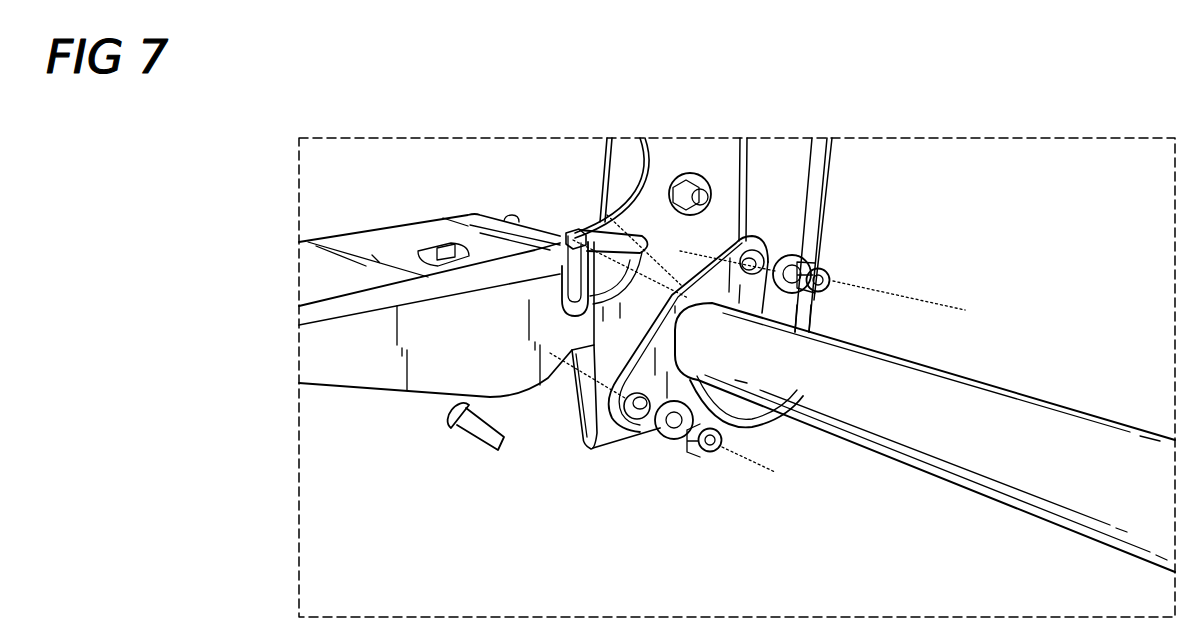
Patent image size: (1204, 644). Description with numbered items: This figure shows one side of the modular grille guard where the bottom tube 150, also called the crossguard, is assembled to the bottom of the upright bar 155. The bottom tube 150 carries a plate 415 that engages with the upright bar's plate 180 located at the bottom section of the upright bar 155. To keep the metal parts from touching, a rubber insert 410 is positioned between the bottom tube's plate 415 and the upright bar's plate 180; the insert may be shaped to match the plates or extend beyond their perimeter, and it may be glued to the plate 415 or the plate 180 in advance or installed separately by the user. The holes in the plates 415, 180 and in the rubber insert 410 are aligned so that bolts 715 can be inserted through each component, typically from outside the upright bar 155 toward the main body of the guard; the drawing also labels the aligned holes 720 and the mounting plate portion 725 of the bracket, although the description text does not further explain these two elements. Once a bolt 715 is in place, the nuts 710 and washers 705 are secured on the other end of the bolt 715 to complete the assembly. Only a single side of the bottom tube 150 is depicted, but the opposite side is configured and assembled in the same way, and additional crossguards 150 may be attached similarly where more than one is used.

The bottom tube 150 is at (898, 462).
The upright bar 155 is at (812, 318).
The upright bar's plate 180 is at (785, 147).
The rubber insert 410 is at (607, 215).
The bottom tube's plate 415 is at (560, 240).
The washer 705 is at (831, 280).
The nut 710 is at (812, 257).
The bolt 715 is at (485, 444).
The mounting hole 720 is at (755, 252).
The mounting plate 725 is at (357, 390).